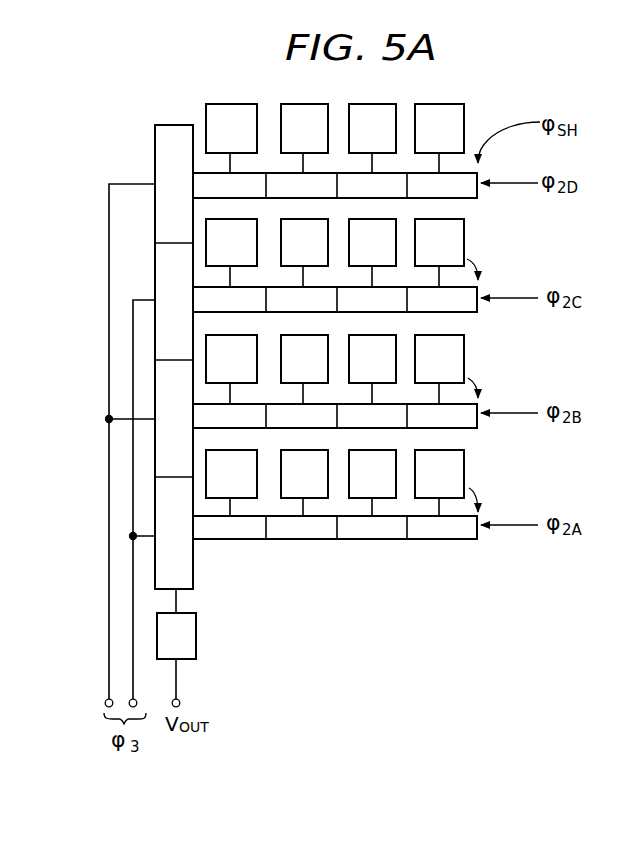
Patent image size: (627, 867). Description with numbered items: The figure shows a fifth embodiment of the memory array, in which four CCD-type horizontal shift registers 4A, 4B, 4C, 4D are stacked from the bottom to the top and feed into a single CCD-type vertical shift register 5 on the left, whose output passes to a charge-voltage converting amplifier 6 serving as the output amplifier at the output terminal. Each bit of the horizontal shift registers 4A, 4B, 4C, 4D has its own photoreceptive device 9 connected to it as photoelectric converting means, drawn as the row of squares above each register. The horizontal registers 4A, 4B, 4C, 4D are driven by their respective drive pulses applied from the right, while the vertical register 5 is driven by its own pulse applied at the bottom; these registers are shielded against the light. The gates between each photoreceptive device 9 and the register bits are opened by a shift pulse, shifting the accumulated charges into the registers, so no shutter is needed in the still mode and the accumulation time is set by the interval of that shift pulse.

The vertical shift register 5 is at (167, 125).
The charge-voltage converting amplifier 6 is at (196, 635).
The photoreceptive device 9 is at (468, 467).
The horizontal shift register 4A is at (377, 539).
The horizontal shift register 4B is at (465, 429).
The horizontal shift register 4C is at (465, 313).
The horizontal shift register 4D is at (464, 199).